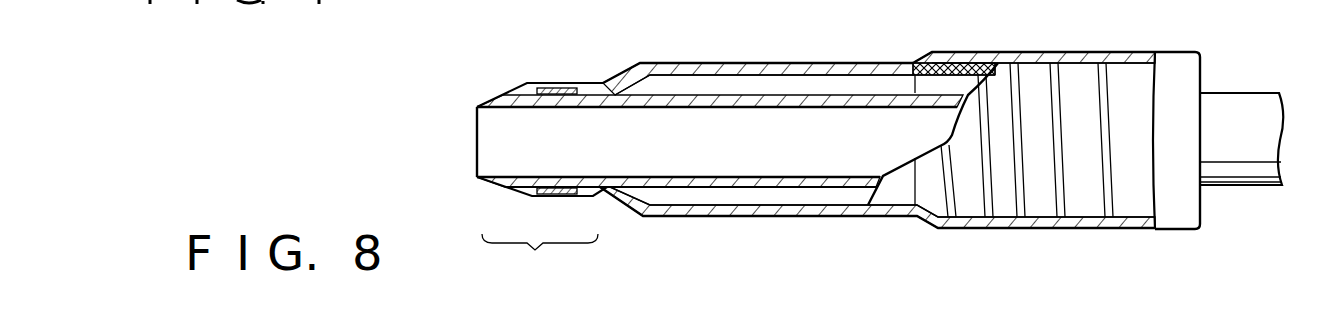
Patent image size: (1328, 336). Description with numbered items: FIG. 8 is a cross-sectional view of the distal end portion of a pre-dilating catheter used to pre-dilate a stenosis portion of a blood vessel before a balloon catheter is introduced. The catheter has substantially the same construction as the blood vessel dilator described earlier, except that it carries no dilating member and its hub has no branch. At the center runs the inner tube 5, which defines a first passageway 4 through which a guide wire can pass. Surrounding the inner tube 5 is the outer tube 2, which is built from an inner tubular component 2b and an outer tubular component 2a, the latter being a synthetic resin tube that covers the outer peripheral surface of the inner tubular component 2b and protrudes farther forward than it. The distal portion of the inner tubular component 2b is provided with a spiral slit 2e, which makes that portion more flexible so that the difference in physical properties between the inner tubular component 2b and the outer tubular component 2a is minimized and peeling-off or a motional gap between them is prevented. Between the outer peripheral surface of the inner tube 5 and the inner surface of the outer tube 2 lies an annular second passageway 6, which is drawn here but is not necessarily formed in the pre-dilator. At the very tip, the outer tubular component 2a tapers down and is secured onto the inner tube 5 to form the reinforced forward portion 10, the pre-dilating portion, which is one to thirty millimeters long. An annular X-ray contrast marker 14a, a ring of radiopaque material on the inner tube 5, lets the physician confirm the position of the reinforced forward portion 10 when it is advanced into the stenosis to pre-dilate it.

The outer tube 2 is at (1178, 75).
The outer tubular component 2a is at (808, 64).
The inner tubular component 2b is at (955, 63).
The spiral slit 2e is at (950, 64).
The first passageway 4 is at (507, 143).
The inner tube 5 is at (856, 98).
The second passageway 6 is at (814, 200).
The reinforced forward portion 10 is at (540, 261).
The X-ray contrast marker 14a is at (550, 88).